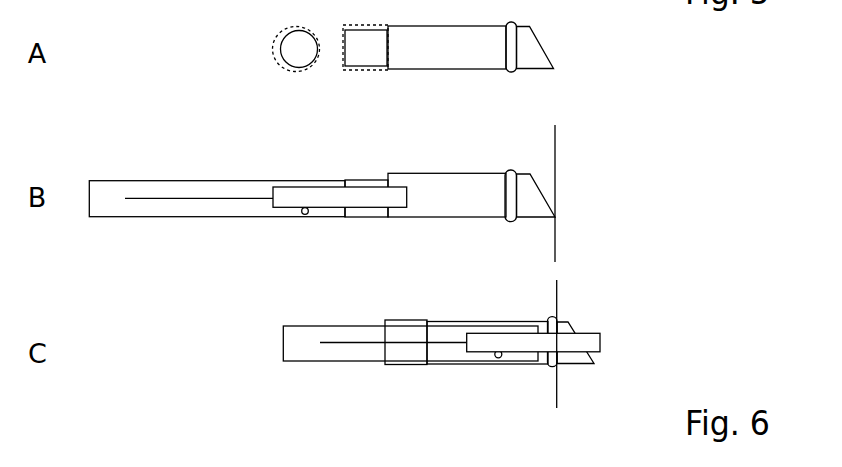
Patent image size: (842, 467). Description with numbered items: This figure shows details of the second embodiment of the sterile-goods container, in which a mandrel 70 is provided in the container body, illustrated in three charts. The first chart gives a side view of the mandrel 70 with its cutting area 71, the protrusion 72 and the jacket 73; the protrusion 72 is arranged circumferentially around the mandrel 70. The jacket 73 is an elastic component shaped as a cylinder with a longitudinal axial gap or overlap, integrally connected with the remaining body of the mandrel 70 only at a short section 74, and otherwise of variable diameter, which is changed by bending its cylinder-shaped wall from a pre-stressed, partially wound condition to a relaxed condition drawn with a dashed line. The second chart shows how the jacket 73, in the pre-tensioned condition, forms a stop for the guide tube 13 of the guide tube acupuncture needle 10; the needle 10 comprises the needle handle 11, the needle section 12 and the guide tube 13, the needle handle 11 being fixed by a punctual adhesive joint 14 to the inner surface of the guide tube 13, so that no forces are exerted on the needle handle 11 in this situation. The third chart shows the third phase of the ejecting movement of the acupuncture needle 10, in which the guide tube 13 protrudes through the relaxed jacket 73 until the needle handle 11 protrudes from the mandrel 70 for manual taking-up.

The guide tube acupuncture needle 10 is at (352, 316).
The needle handle 11 is at (380, 208).
The needle section 12 is at (168, 198).
The guide tube 13 is at (239, 210).
The adhesive joint 14 is at (302, 215).
The mandrel 70 is at (472, 18).
The cutting area 71 is at (551, 187).
The protrusion 72 is at (468, 195).
The jacket 73 is at (410, 318).
The short section 74 is at (305, 77).